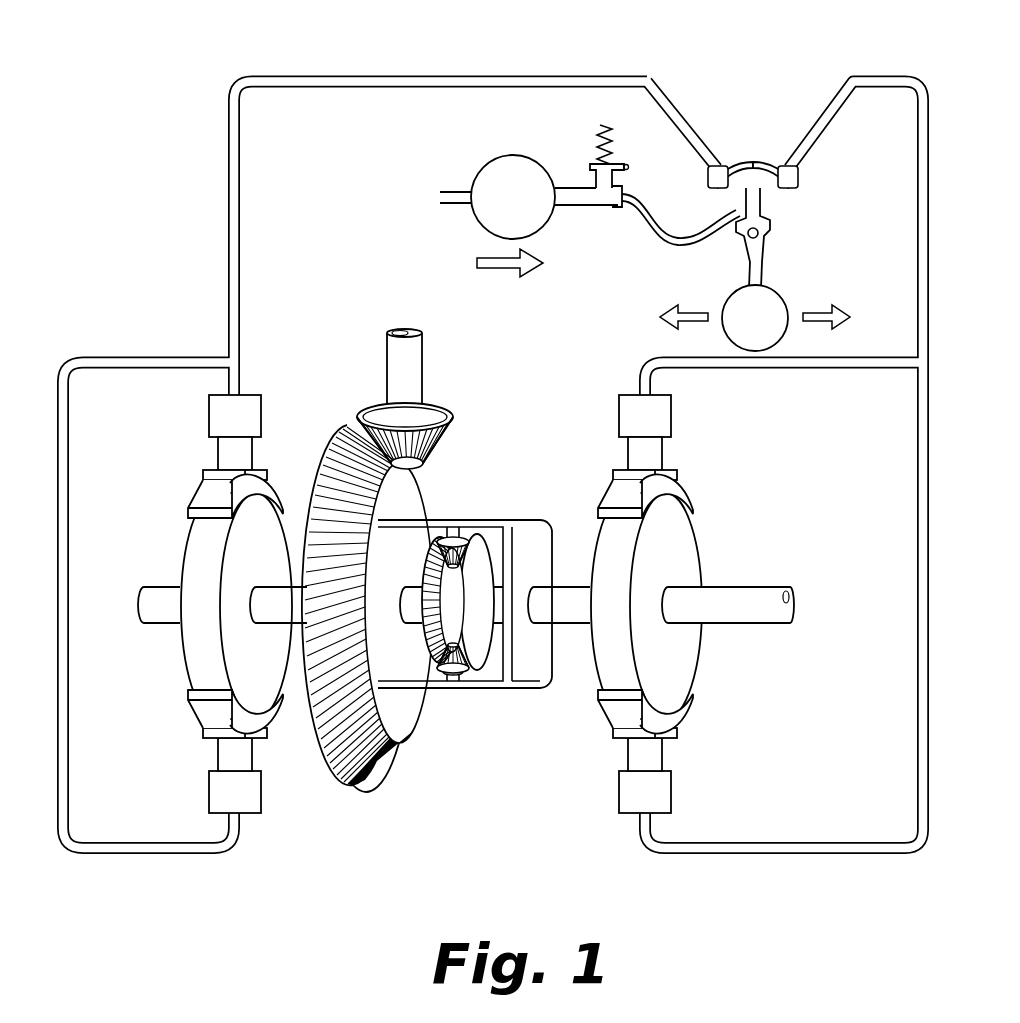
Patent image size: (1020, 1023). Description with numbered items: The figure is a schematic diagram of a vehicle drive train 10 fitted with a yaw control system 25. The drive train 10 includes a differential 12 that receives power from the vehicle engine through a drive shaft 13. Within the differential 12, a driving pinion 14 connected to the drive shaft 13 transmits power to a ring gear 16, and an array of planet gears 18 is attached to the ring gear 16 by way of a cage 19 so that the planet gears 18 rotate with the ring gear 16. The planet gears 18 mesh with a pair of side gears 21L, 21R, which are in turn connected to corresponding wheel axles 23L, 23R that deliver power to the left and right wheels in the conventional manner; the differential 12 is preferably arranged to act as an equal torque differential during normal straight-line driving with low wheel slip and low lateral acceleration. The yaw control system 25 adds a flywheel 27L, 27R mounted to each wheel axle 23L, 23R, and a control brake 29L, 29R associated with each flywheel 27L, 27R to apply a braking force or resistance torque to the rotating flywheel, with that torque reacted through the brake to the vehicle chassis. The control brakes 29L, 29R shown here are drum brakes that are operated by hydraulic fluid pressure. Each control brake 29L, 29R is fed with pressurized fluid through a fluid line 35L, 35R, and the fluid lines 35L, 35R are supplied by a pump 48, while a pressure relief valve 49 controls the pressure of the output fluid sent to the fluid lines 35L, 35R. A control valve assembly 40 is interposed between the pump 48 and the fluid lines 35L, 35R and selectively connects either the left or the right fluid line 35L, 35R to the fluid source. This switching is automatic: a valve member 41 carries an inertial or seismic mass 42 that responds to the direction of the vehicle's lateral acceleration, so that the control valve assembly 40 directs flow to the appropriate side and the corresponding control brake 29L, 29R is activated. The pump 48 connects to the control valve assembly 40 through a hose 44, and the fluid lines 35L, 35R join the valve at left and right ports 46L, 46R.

The drive train 10 is at (150, 76).
The differential 12 is at (344, 334).
The drive shaft 13 is at (418, 378).
The driving pinion 14 is at (452, 435).
The ring gear 16 is at (367, 790).
The planet gears 18 is at (468, 552).
The cage 19 is at (530, 683).
The left side gear 21L is at (426, 626).
The right side gear 21R is at (478, 566).
The left wheel axle 23L is at (157, 592).
The right wheel axle 23R is at (766, 622).
The yaw control system 25 is at (662, 66).
The left flywheel 27L is at (198, 665).
The right flywheel 27R is at (672, 672).
The left control brake 29L is at (278, 484).
The right control brake 29R is at (683, 487).
The left fluid line 35L is at (382, 76).
The right fluid line 35R is at (912, 74).
The control valve assembly 40 is at (808, 228).
The valve member 41 is at (748, 237).
The inertial mass 42 is at (783, 292).
The master cylinder hose 44 is at (660, 250).
The left valve port 46L is at (727, 160).
The right valve port 46R is at (794, 162).
The pump 48 is at (500, 185).
The pressure relief valve 49 is at (594, 160).